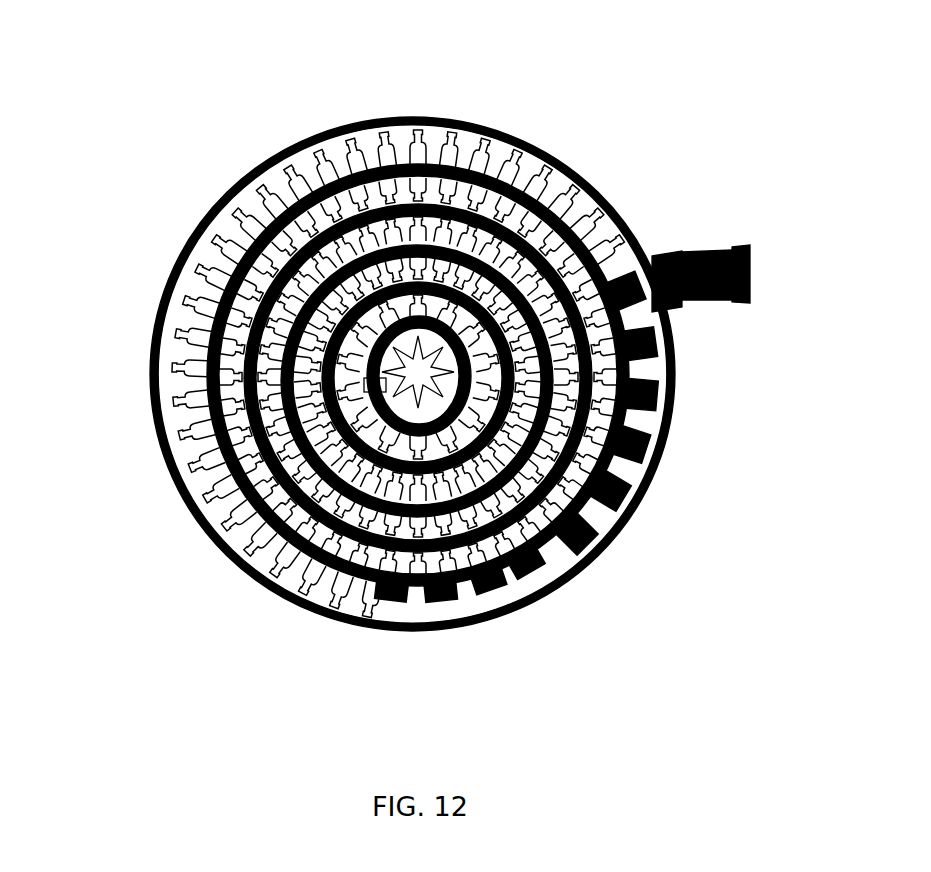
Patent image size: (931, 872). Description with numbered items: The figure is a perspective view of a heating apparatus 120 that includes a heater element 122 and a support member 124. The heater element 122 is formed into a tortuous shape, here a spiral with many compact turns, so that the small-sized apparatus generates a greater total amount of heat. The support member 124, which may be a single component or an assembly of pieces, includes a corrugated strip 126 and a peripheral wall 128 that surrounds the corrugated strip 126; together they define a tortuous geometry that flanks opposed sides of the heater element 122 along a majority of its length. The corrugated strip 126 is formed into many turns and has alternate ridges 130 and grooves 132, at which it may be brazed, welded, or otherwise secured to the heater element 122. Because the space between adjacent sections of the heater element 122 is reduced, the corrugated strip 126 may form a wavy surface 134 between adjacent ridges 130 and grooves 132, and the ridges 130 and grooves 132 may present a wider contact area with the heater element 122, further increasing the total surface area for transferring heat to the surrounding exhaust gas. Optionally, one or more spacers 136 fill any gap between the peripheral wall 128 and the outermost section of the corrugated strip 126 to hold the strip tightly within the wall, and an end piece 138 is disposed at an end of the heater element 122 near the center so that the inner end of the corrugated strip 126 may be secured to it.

The heating apparatus 120 is at (700, 41).
The heater element 122 is at (486, 168).
The support member 124 is at (278, 137).
The corrugated strip 126 is at (245, 206).
The peripheral wall 128 is at (622, 206).
The ridges 130 is at (562, 160).
The grooves 132 is at (235, 535).
The wavy surface 134 is at (490, 552).
The spacer 136 is at (533, 565).
The end piece 138 is at (358, 387).